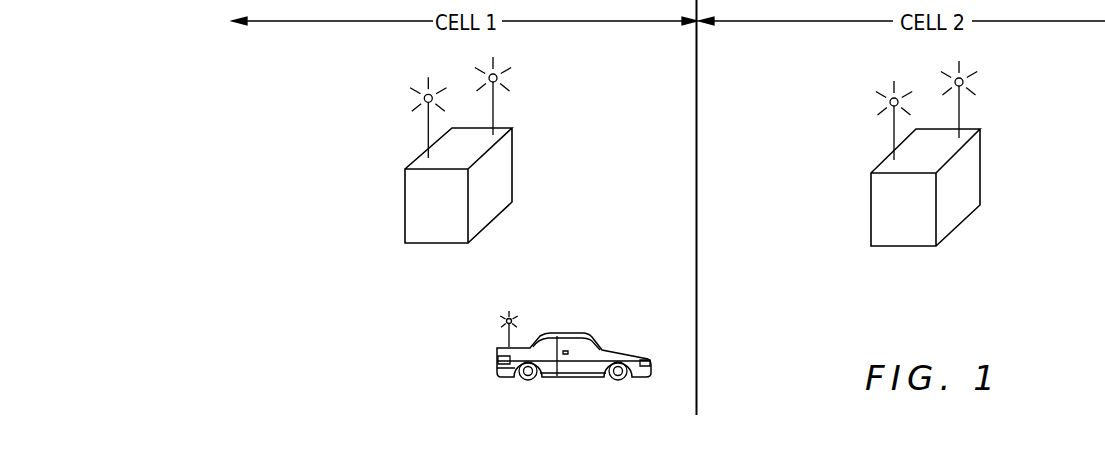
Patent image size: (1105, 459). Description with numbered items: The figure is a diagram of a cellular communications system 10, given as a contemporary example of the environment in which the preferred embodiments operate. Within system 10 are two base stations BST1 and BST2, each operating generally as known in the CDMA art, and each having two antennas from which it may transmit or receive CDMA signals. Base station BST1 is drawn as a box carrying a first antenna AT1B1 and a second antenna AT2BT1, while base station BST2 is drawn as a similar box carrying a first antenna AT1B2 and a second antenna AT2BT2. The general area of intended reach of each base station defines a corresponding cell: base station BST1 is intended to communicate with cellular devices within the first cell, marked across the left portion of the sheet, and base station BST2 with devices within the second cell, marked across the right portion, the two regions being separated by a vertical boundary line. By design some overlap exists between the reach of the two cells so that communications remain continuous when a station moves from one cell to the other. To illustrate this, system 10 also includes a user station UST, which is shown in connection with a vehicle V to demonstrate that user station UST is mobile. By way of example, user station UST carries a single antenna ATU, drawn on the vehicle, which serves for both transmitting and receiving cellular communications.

The cellular communications system 10 is at (346, 365).
The base station BST1 is at (458, 185).
The base station BST2 is at (925, 187).
The first antenna AT1B1 is at (428, 127).
The second antenna AT2BT1 is at (493, 115).
The first antenna AT1B2 is at (894, 129).
The second antenna AT2BT2 is at (959, 119).
The user station UST is at (573, 372).
The antenna ATU is at (507, 334).
The vehicle V is at (574, 363).